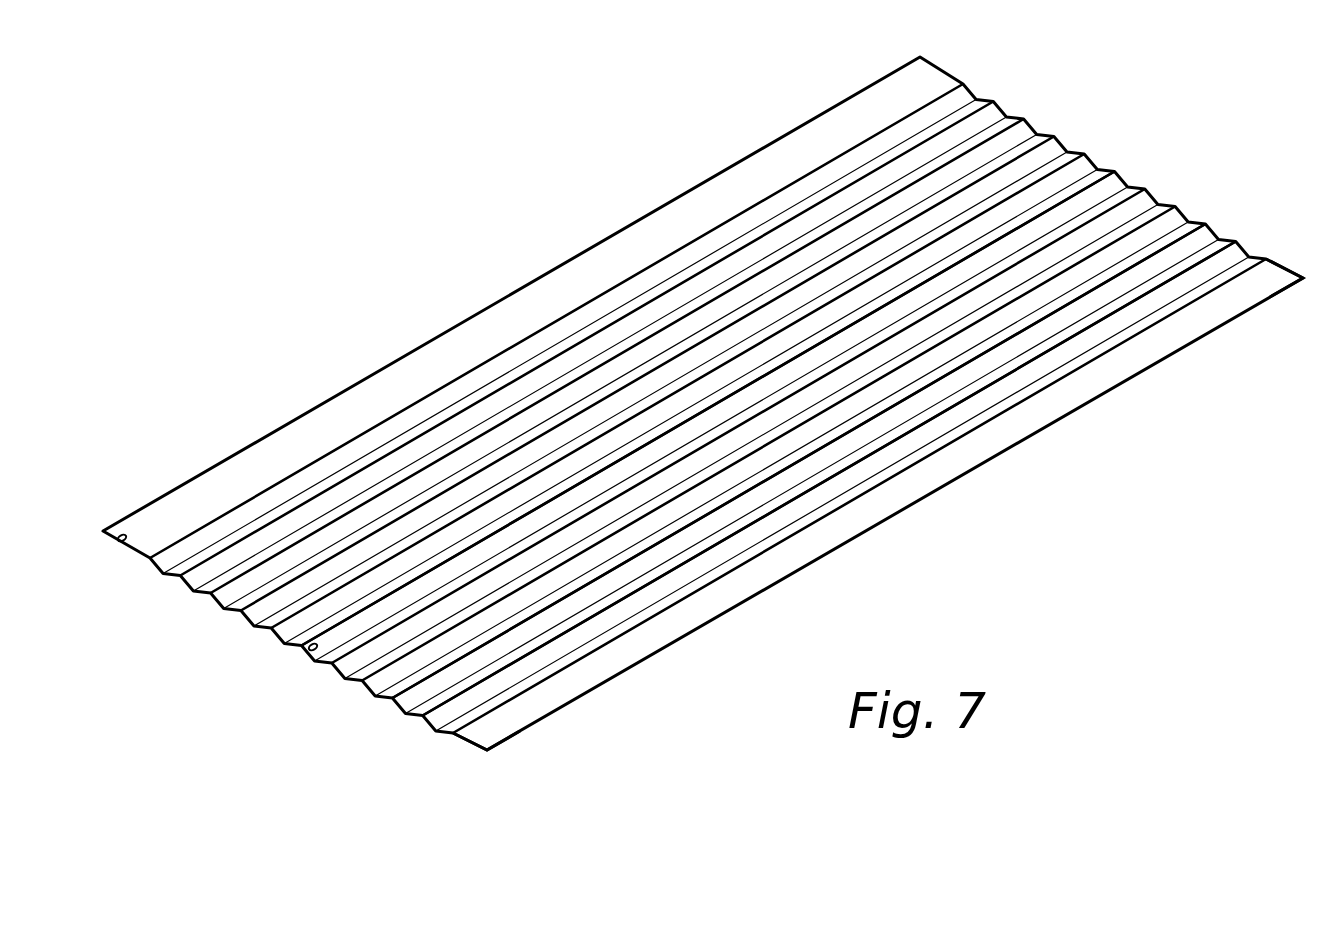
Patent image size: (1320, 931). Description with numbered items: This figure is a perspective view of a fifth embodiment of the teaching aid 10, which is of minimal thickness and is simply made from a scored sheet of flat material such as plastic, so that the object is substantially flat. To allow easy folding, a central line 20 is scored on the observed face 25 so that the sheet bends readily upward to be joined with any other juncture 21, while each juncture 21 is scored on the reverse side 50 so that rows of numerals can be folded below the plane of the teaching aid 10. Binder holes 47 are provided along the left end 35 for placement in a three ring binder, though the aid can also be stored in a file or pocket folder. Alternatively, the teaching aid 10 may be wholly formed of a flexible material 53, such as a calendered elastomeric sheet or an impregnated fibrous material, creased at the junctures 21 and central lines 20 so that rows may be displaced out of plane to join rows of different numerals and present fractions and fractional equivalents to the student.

The teaching aid 10 is at (207, 757).
The central line 20 is at (440, 737).
The juncture 21 is at (1232, 238).
The observed face 25 is at (1118, 168).
The left end 35 is at (385, 707).
The binder holes 47 is at (127, 553).
The reverse side 50 is at (333, 657).
The flexible material 53 is at (830, 486).